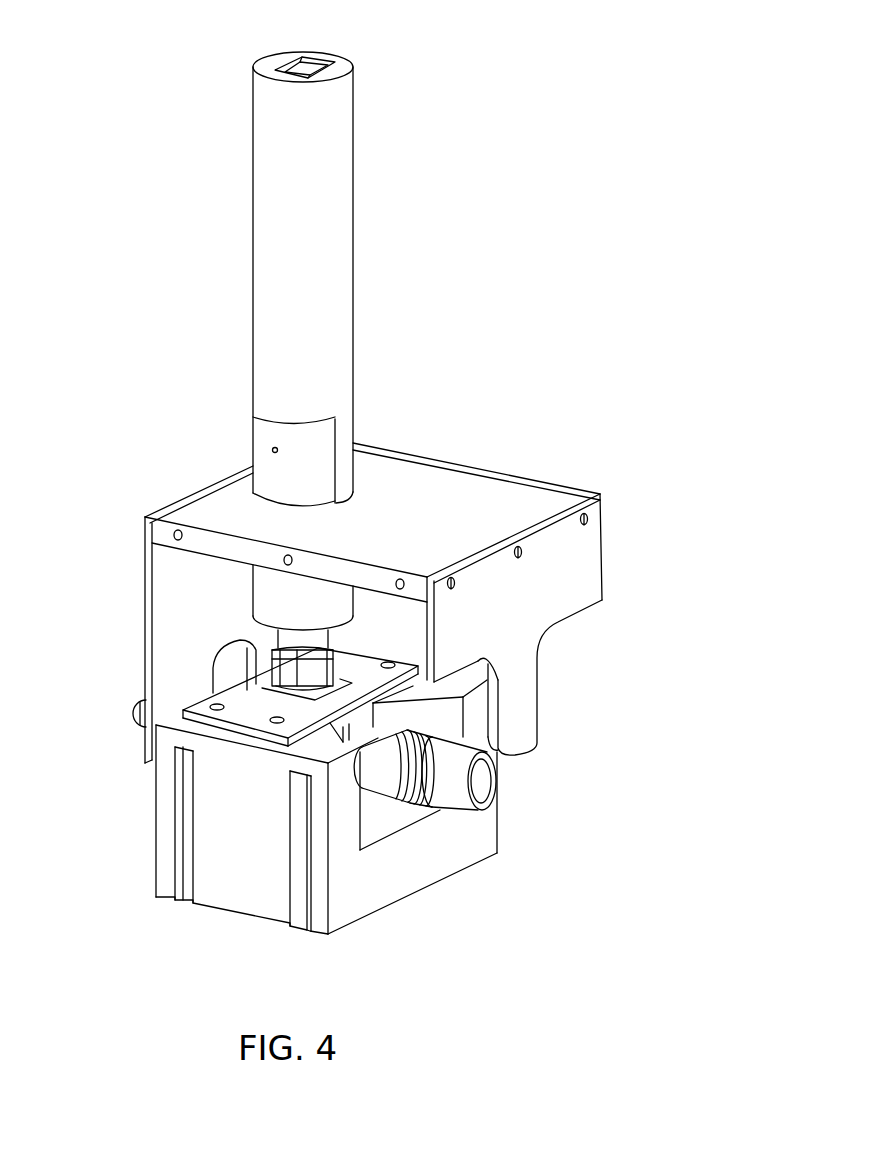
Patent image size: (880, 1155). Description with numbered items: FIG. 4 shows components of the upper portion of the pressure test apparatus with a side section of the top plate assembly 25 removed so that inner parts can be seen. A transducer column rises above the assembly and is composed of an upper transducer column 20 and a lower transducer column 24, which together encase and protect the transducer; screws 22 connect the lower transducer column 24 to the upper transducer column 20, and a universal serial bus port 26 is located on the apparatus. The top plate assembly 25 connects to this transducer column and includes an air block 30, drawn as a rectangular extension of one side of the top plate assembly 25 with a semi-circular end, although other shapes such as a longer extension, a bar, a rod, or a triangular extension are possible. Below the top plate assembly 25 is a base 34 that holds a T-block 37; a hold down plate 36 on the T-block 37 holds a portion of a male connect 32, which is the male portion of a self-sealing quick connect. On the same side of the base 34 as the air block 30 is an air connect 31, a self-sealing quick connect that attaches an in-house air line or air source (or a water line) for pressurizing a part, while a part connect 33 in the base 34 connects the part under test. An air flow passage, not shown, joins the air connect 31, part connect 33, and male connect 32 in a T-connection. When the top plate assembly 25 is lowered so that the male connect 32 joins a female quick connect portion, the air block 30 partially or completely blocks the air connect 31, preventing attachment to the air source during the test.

The upper transducer column 20 is at (346, 147).
The screws 22 is at (273, 450).
The lower transducer column 24 is at (263, 430).
The top plate assembly 25 is at (461, 490).
The universal serial bus port 26 is at (310, 62).
The air block 30 is at (532, 712).
The air connect 31 is at (489, 782).
The male connect 32 is at (248, 665).
The part connect 33 is at (133, 714).
The base 34 is at (234, 902).
The hold down plate 36 is at (213, 695).
The T-block 37 is at (345, 728).